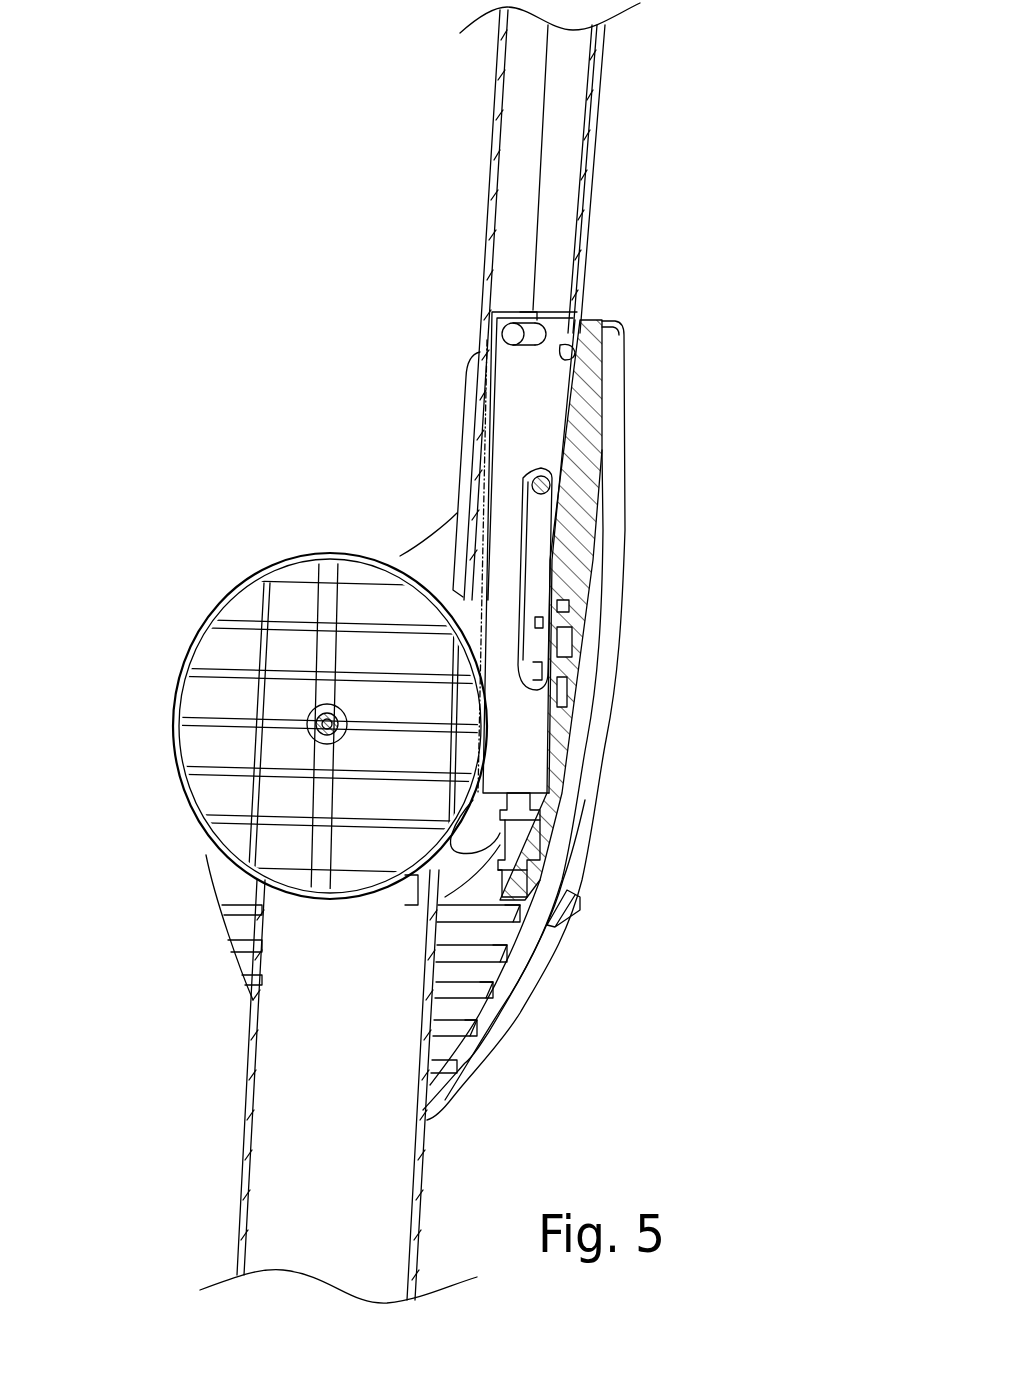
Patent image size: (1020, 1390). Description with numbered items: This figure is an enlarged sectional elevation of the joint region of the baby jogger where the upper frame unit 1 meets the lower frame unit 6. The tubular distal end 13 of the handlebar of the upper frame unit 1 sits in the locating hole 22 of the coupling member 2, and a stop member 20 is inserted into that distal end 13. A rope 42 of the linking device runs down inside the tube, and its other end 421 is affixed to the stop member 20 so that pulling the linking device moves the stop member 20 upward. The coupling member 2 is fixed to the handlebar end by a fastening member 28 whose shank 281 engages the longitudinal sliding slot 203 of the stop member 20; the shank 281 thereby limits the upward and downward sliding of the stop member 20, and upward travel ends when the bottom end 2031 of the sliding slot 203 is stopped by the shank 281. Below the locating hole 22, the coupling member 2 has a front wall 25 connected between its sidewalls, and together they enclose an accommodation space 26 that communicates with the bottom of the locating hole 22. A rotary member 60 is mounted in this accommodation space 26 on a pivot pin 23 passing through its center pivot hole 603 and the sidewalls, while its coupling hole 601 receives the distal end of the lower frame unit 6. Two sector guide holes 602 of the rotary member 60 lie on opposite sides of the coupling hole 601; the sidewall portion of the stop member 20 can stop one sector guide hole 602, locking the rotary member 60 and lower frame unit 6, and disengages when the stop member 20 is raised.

The upper frame unit 1 is at (613, 65).
The rope 42 is at (540, 193).
The other end of the rope 421 is at (557, 333).
The distal end of the U-shaped handlebar 13 is at (568, 345).
The locating hole 22 is at (580, 387).
The coupling member 2 is at (628, 527).
The accommodation space 26 is at (442, 550).
The front wall 25 is at (595, 735).
The stop member 20 is at (567, 615).
The shank of the fastening member 281 is at (549, 487).
The fastening member 28 is at (540, 498).
The longitudinal sliding slot 203 is at (557, 583).
The bottom end of the longitudinal sliding slot 2031 is at (547, 690).
The sector guide hole 602 is at (480, 833).
The rotary member 60 is at (182, 772).
The pivot pin 23 is at (315, 713).
The center pivot hole 603 is at (327, 720).
The coupling hole 601 is at (410, 880).
The lower frame unit 6 is at (219, 1175).